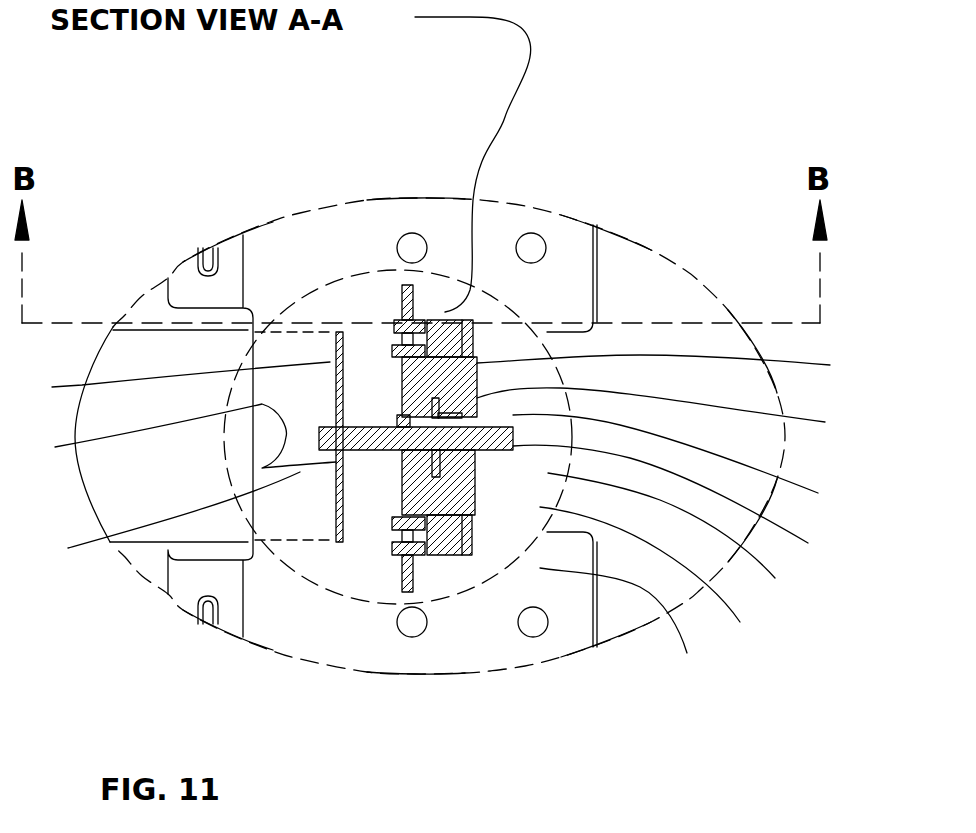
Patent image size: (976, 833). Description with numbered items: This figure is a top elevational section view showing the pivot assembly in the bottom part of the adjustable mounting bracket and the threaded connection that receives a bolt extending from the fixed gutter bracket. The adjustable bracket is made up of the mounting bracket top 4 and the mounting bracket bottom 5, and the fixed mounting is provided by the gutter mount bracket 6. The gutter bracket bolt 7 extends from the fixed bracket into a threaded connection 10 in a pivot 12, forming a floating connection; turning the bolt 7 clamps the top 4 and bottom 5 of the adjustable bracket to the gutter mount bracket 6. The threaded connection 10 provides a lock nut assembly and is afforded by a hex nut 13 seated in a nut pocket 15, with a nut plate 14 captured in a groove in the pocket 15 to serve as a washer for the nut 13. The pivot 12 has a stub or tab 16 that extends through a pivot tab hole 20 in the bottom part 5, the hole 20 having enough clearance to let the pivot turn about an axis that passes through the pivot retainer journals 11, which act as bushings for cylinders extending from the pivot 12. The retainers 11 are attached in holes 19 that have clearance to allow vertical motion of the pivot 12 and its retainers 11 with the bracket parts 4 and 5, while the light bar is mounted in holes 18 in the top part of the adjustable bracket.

The mounting bracket top 4 is at (475, 643).
The mounting bracket bottom 5 is at (183, 590).
The gutter mount bracket 6 is at (178, 381).
The gutter bracket bolt 7 is at (676, 507).
The threaded connection 10 is at (689, 465).
The pivot retainer journals 11 is at (598, 277).
The pivot 12 is at (671, 370).
The hex nut 13 is at (681, 541).
The nut plate 14 is at (656, 584).
The nut pocket 15 is at (671, 415).
The tab 16 is at (175, 436).
The holes 18 is at (531, 240).
The holes 19 is at (394, 340).
The pivot tab hole 20 is at (163, 521).